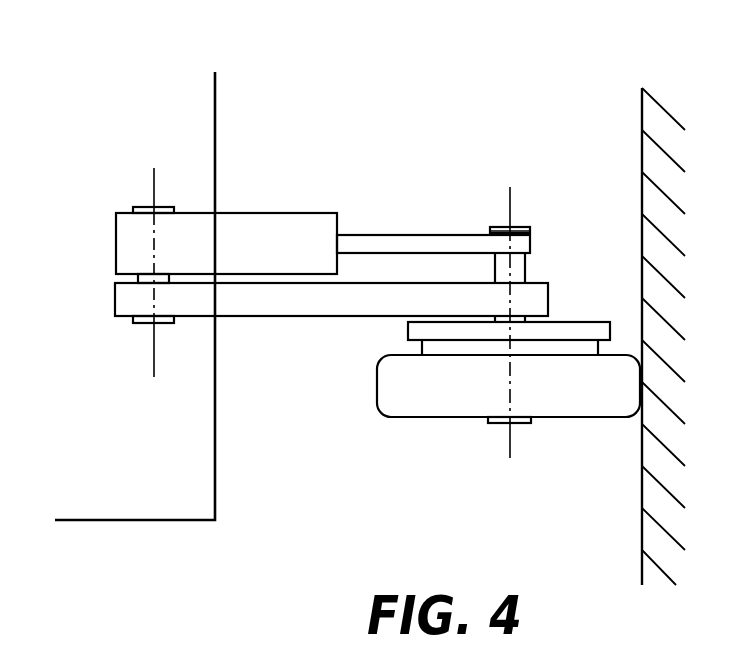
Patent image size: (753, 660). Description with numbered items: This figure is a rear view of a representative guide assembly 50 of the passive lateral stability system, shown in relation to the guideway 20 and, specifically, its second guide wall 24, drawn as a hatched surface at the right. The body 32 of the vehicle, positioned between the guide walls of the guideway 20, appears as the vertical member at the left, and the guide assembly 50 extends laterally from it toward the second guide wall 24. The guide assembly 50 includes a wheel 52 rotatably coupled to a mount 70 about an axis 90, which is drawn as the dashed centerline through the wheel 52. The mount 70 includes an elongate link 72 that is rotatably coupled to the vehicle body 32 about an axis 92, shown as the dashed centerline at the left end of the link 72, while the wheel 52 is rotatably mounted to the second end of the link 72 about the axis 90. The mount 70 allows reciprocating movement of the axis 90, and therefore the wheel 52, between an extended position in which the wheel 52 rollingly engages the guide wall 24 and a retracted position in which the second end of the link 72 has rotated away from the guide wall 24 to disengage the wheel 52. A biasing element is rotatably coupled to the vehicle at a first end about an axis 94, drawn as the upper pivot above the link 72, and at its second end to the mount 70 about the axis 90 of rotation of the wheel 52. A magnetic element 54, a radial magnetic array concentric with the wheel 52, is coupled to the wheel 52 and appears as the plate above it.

The guideway 20 is at (631, 107).
The second guide wall 24 is at (641, 160).
The body 32 is at (216, 103).
The guide assembly 50 is at (424, 168).
The wheel 52 is at (415, 418).
The magnetic element 54 is at (565, 322).
The mount 70 is at (331, 309).
The elongate link 72 is at (325, 317).
The axis 90 is at (511, 438).
The axis 92 is at (152, 340).
The axis 94 is at (153, 187).